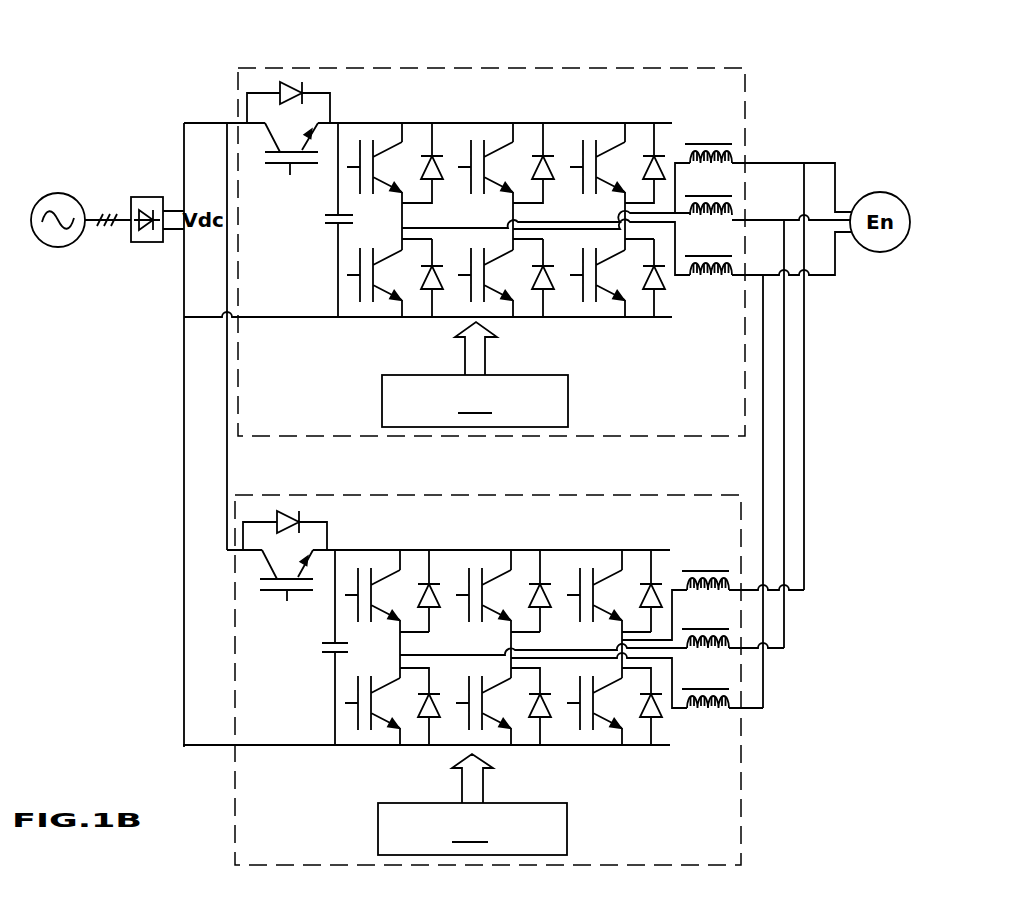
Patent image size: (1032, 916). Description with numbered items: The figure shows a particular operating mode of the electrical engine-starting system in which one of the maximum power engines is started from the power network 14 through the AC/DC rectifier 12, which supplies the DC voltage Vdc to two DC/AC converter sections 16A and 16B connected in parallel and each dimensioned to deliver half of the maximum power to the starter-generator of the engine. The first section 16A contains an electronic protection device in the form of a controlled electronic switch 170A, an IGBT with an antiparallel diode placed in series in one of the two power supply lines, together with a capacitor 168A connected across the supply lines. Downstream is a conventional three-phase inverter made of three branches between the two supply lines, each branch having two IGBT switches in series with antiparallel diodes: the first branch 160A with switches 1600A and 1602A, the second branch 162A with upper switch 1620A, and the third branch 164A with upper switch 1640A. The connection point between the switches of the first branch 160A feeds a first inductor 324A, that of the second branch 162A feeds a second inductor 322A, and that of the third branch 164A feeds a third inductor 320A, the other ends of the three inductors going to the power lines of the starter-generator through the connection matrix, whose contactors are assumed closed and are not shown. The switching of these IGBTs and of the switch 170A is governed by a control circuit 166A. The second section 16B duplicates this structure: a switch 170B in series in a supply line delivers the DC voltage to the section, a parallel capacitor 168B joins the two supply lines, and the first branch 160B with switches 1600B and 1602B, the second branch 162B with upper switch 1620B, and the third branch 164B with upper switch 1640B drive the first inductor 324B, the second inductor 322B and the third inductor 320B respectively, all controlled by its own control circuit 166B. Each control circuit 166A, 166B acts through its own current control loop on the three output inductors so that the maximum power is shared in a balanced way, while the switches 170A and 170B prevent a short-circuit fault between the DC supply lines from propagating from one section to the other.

The AC/DC rectifier 12 is at (137, 197).
The power network 14 is at (61, 193).
The first section of the DC/AC converter 16A is at (745, 119).
The second section of the DC/AC converter 16B is at (741, 769).
The first branch 160A is at (400, 193).
The second branch 162A is at (524, 195).
The third branch 164A is at (628, 193).
The switch 1600A is at (375, 145).
The switch 1602A is at (368, 318).
The switch 1620A is at (486, 145).
The switch 1640A is at (598, 145).
The control circuit 166A is at (475, 374).
The capacitor 168A is at (325, 227).
The controlled electronic switch 170A is at (283, 165).
The third inductor 320A is at (717, 148).
The second inductor 322A is at (732, 197).
The first inductor 324A is at (735, 256).
The first branch 160B is at (397, 622).
The second branch 162B is at (522, 613).
The third branch 164B is at (625, 622).
The switch 1600B is at (373, 575).
The switch 1602B is at (373, 747).
The switch 1620B is at (484, 575).
The switch 1640B is at (596, 575).
The control circuit 166B is at (472, 804).
The parallel capacitor 168B is at (328, 656).
The switch 170B is at (280, 592).
The third inductor 320B is at (713, 577).
The second inductor 322B is at (730, 627).
The first inductor 324B is at (733, 685).